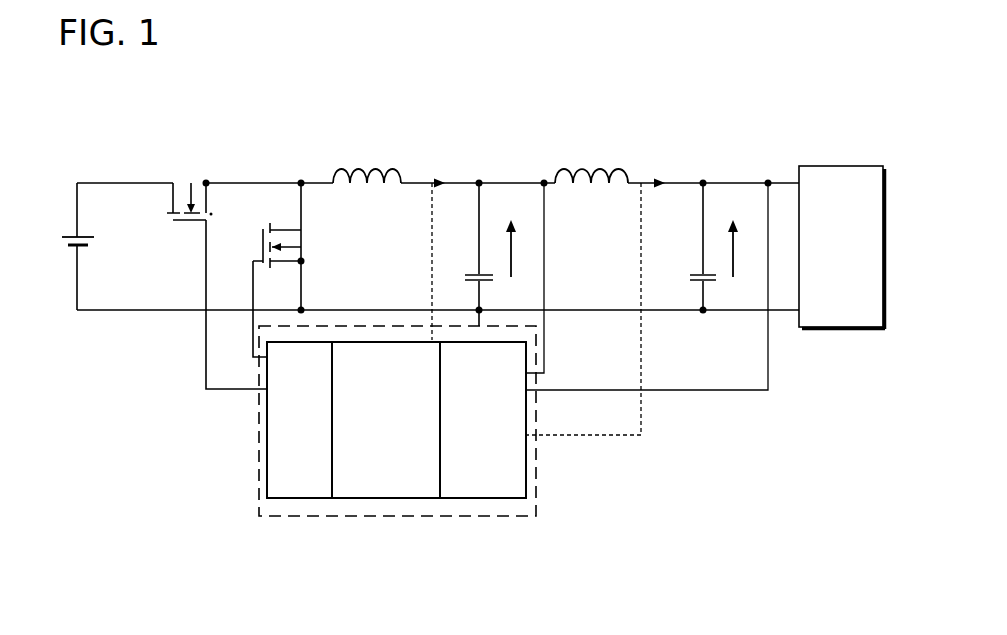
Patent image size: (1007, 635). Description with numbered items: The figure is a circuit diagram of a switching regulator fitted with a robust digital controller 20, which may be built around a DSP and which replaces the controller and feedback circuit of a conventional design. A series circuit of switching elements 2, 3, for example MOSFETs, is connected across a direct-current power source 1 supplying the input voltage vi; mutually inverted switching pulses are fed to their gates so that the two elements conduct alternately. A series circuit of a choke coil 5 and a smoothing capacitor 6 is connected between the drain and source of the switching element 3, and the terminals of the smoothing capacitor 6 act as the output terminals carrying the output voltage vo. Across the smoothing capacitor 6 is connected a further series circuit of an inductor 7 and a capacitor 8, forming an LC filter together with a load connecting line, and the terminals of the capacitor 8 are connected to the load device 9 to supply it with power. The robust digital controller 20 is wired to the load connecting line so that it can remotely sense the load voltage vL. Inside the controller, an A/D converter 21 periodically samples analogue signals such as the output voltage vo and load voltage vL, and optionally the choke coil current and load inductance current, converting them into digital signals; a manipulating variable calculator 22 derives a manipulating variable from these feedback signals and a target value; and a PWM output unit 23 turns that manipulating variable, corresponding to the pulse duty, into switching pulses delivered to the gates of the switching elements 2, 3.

The direct-current power source 1 is at (58, 247).
The switching element 2 is at (188, 170).
The switching element 3 is at (310, 247).
The choke coil 5 is at (361, 160).
The smoothing capacitor 6 is at (470, 262).
The inductor 7 is at (593, 160).
The capacitor 8 is at (697, 258).
The load device 9 is at (836, 168).
The robust digital controller 20 is at (353, 462).
The A/D converter 21 is at (484, 490).
The manipulating variable calculator 22 is at (383, 490).
The PWM output unit 23 is at (297, 490).